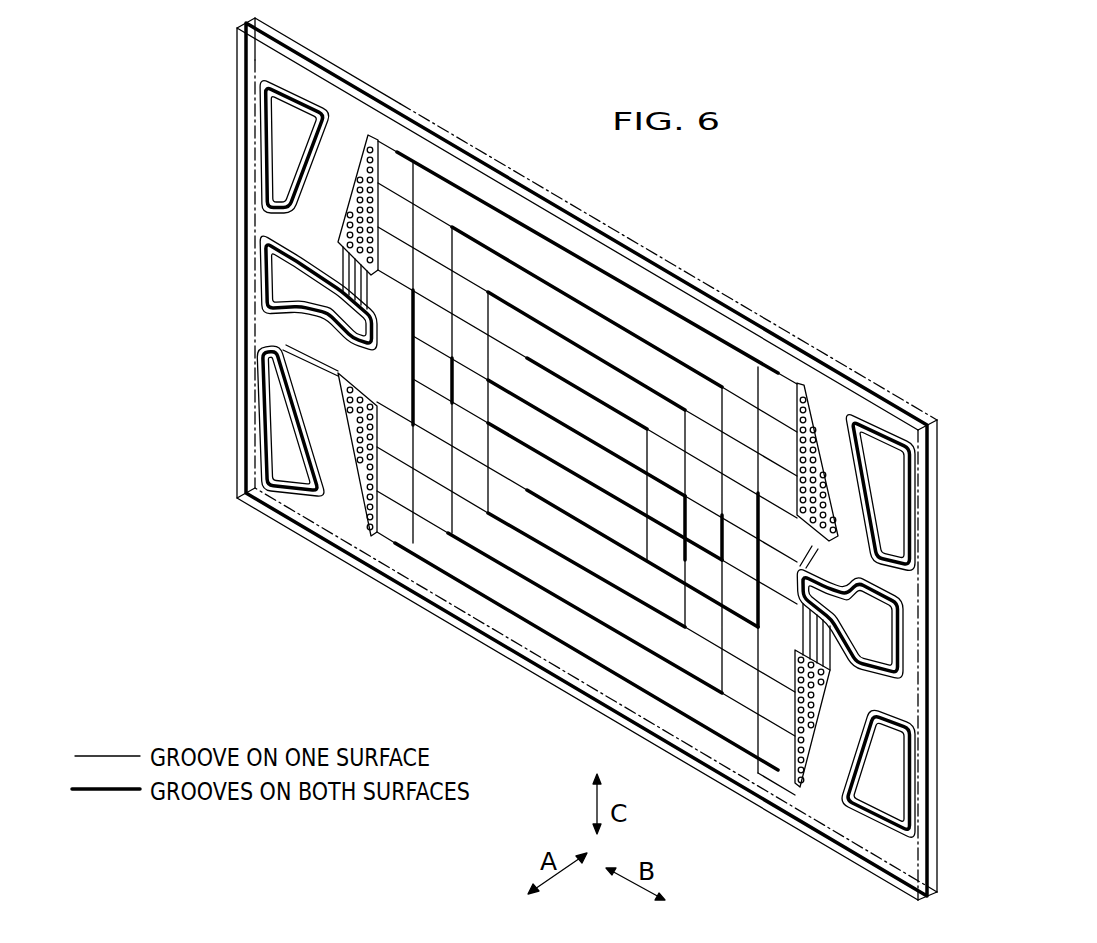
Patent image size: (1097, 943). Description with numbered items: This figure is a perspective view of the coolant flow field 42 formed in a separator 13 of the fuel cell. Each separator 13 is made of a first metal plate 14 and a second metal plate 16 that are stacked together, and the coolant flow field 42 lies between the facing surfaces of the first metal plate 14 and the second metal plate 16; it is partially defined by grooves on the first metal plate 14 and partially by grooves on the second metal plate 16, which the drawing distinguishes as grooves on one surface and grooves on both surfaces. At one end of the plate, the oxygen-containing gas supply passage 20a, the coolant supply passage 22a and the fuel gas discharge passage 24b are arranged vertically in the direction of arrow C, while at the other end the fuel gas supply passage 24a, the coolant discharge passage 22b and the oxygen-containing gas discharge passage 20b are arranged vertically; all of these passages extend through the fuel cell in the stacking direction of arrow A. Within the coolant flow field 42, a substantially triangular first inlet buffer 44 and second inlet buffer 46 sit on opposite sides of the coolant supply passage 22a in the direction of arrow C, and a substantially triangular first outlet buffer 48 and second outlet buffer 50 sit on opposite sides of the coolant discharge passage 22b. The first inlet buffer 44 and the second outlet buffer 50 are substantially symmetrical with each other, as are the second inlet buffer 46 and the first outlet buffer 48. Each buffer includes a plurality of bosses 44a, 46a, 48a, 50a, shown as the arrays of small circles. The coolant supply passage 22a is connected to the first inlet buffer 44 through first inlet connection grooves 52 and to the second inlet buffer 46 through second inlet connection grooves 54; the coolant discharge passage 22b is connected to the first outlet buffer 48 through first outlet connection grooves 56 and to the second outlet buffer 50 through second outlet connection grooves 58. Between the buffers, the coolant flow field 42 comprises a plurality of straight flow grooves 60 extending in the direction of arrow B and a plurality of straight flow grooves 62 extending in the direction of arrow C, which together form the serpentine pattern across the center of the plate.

The separator 13 is at (1017, 455).
The first metal plate 14 is at (933, 478).
The second metal plate 16 is at (940, 442).
The oxygen-containing gas supply passage 20a is at (285, 132).
The oxygen-containing gas discharge passage 20b is at (884, 765).
The coolant supply passage 22a is at (318, 293).
The coolant discharge passage 22b is at (850, 624).
The fuel gas supply passage 24a is at (888, 520).
The fuel gas discharge passage 24b is at (283, 435).
The coolant flow field 42 is at (650, 459).
The first inlet buffer 44 is at (356, 492).
The bosses 44a is at (395, 536).
The second inlet buffer 46 is at (360, 178).
The bosses 46a is at (390, 210).
The first outlet buffer 48 is at (805, 748).
The bosses 48a is at (793, 740).
The second outlet buffer 50 is at (806, 418).
The bosses 50a is at (797, 442).
The first inlet connection grooves 52 is at (333, 365).
The second inlet connection grooves 54 is at (350, 280).
The first outlet connection grooves 56 is at (802, 638).
The second outlet connection grooves 58 is at (803, 557).
The straight flow grooves 60 is at (612, 671).
The straight flow grooves 62 is at (412, 467).